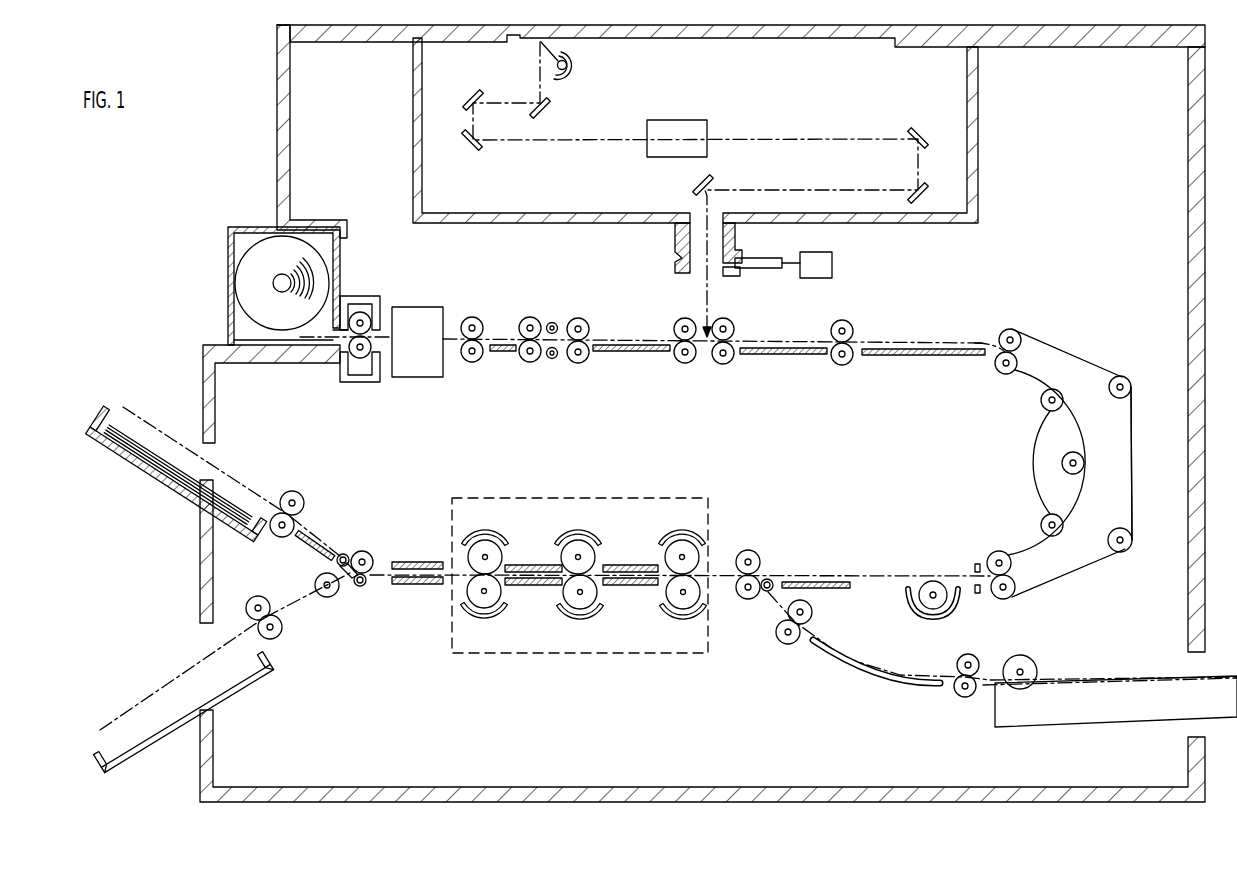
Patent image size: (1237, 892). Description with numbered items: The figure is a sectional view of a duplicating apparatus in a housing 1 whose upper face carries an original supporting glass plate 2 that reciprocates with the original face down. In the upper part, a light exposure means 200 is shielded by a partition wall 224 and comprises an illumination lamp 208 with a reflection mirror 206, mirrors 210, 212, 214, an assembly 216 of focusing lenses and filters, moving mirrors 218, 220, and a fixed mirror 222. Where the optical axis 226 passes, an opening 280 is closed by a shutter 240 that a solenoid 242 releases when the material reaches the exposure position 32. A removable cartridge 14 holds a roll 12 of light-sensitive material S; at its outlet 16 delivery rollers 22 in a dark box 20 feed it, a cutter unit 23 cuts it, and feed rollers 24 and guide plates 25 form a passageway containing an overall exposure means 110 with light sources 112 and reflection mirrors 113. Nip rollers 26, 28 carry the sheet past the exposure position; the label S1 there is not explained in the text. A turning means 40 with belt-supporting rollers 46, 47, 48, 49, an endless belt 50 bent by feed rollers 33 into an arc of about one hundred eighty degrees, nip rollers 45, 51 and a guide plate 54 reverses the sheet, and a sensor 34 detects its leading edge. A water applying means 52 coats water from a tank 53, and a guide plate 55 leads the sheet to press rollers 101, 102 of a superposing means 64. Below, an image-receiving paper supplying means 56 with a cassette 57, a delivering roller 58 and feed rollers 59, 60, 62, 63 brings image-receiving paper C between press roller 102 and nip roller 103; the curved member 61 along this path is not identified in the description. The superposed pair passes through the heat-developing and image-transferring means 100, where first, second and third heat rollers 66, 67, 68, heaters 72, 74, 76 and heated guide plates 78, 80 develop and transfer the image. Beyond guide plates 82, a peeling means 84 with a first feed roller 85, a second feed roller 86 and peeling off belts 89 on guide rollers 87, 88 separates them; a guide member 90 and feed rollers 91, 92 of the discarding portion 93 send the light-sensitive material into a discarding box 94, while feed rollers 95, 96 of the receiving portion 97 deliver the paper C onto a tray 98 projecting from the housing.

The housing 1 is at (277, 103).
The original supporting glass plate 2 is at (755, 39).
The roll 12 is at (246, 285).
The cartridge 14 is at (265, 286).
The outlet 16 is at (347, 330).
The dark box 20 is at (370, 333).
The delivery rollers 22 is at (366, 313).
The cutter unit 23 is at (422, 307).
The feed rollers 24 is at (472, 362).
The guide plates 25 is at (500, 352).
The nip rollers 26 is at (684, 364).
The nip rollers 28 is at (724, 365).
The exposure position 32 is at (707, 358).
The feed rollers 33 is at (1062, 462).
The sensor 34 is at (976, 566).
The turning means 40 is at (1066, 462).
The nip roller 45 is at (1002, 374).
The belt-supporting roller 46 is at (1006, 331).
The belt-supporting roller 47 is at (1125, 380).
The belt-supporting roller 48 is at (1128, 550).
The belt-supporting roller 49 is at (1000, 598).
The endless belt 50 is at (1131, 463).
The nip roller 51 is at (1003, 551).
The water applying means 52 is at (950, 605).
The tank 53 is at (920, 614).
The guide plate 54 is at (970, 356).
The guide plate 55 is at (832, 589).
The image-receiving paper supplying means 56 is at (1110, 687).
The image-receiving paper supplying cassette 57 is at (1115, 728).
The delivering roller 58 is at (1032, 668).
The feed roller 59 is at (958, 661).
The feed roller 60 is at (958, 693).
The curved guide 61 is at (895, 674).
The feed roller 62 is at (810, 612).
The feed roller 63 is at (786, 644).
The superposing means 64 is at (771, 565).
The first heat rollers 66 is at (668, 552).
The second heat rollers 67 is at (568, 552).
The third heat rollers 68 is at (470, 552).
The heater 72 is at (678, 535).
The heater 74 is at (580, 534).
The heater 76 is at (476, 534).
The guide plates 78 is at (628, 565).
The guide plates 80 is at (520, 565).
The guide plates 82 is at (426, 562).
The peeling means 84 is at (336, 562).
The first feed roller 85 is at (385, 543).
The second feed roller 86 is at (330, 598).
The guide roller 87 is at (354, 580).
The guide roller 88 is at (336, 560).
The peeling off belts 89 is at (358, 588).
The guide member 90 is at (313, 540).
The feed roller 91 is at (298, 492).
The feed roller 92 is at (272, 533).
The light-sensitive material discarding portion 93 is at (185, 432).
The discarding box 94 is at (170, 496).
The feed roller 95 is at (246, 614).
The feed roller 96 is at (284, 630).
The image-receiving paper receiving portion 97 is at (180, 663).
The tray 98 is at (257, 670).
The heat-developing and image-transferring means 100 is at (567, 554).
The press roller 101 is at (758, 555).
The press roller 102 is at (740, 592).
The nip roller 103 is at (772, 580).
The overall exposure means 110 is at (554, 332).
The light sources 112 is at (553, 322).
The reflection mirrors 113 is at (557, 325).
The light exposure means 200 is at (700, 222).
The reflection mirror 206 is at (570, 78).
The illumination lamp 208 is at (572, 56).
The mirror 210 is at (549, 108).
The mirror 212 is at (472, 90).
The mirror 214 is at (468, 150).
The assembly 216 is at (675, 110).
The mirror 218 is at (922, 128).
The mirror 220 is at (926, 192).
The fixed mirror 222 is at (694, 180).
The partition wall 224 is at (547, 214).
The optical axis 226 is at (716, 273).
The shutter 240 is at (768, 269).
The solenoid 242 is at (832, 264).
The opening 280 is at (700, 265).
The light-sensitive material S is at (308, 340).
The film sheet S1 is at (617, 338).
The image-receiving paper C is at (1068, 683).